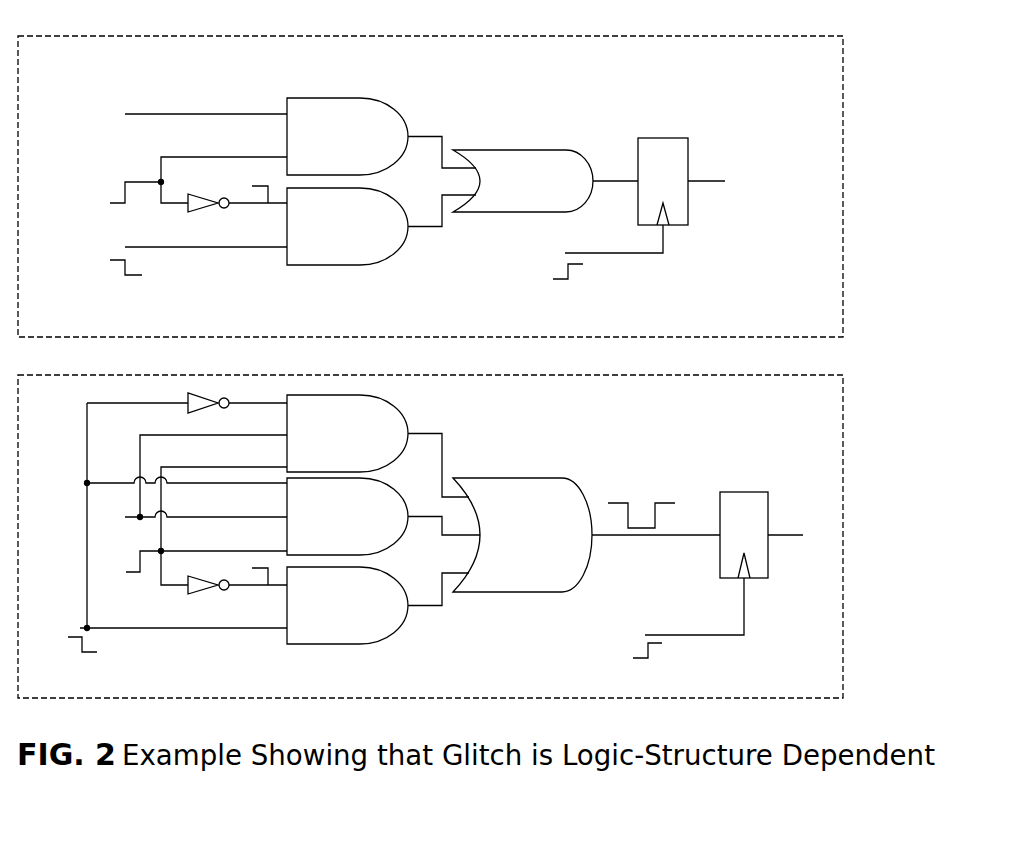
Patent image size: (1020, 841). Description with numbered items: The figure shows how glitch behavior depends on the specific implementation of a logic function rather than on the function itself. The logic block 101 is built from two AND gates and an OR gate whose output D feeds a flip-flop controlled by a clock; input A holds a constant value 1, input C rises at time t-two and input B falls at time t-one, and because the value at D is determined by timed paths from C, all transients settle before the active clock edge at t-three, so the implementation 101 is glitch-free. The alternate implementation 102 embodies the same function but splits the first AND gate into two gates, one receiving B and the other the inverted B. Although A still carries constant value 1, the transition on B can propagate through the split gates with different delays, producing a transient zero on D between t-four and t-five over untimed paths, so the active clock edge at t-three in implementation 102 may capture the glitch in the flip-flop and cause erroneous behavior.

The logic block 101 is at (788, 73).
The alternate implementation 102 is at (789, 408).
The constant value of input A 1 is at (204, 309).